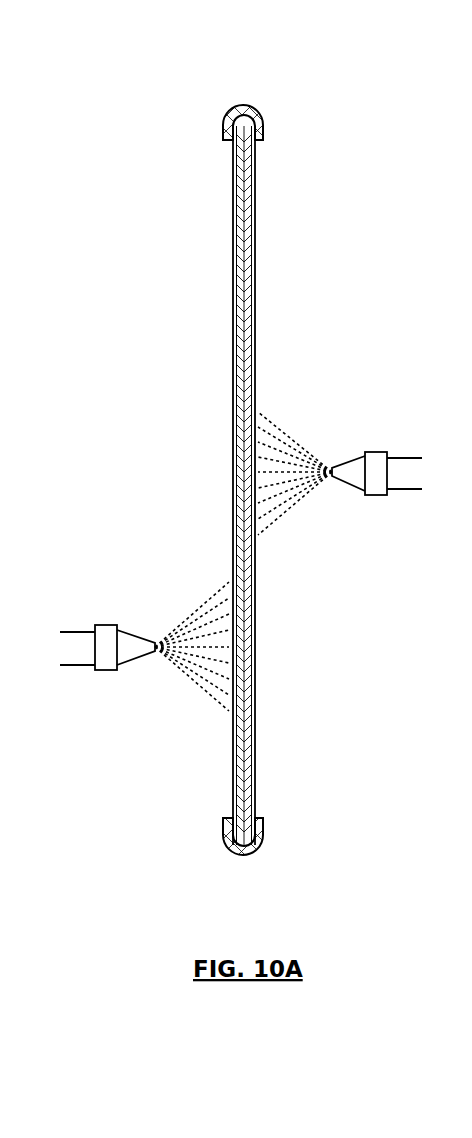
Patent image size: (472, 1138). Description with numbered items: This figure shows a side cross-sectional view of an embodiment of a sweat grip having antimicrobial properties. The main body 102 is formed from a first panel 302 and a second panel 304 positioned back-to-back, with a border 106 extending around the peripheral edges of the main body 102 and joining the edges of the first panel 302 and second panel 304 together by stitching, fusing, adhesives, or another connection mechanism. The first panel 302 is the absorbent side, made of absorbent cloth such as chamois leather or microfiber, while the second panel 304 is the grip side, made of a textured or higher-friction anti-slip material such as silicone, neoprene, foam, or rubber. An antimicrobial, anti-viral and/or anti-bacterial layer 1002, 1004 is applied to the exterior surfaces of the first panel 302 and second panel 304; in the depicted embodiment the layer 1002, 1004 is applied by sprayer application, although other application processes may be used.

The main body 102 is at (207, 432).
The border 106 is at (258, 110).
The first panel 302 is at (238, 215).
The second panel 304 is at (250, 292).
The antimicrobial layer 1002 is at (255, 342).
The antimicrobial layer 1004 is at (232, 173).